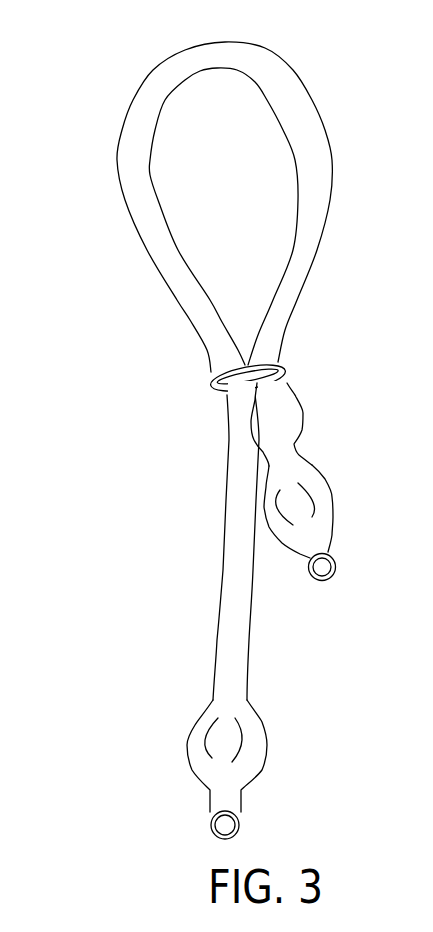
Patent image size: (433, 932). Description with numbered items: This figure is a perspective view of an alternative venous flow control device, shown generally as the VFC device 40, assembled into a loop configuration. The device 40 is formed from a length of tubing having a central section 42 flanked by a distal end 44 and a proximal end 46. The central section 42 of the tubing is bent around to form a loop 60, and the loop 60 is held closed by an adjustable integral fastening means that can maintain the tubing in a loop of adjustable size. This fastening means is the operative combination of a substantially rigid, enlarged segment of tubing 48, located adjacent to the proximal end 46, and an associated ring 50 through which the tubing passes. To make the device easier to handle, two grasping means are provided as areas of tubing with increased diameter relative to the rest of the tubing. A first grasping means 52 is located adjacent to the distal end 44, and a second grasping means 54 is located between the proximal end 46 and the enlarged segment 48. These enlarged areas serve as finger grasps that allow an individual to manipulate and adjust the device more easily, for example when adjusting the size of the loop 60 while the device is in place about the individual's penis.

The VFC device 40 is at (216, 426).
The central section 42 is at (322, 174).
The distal end 44 is at (240, 829).
The proximal end 46 is at (320, 581).
The enlarged segment of tubing 48 is at (319, 393).
The ring 50 is at (214, 385).
The first grasping means 52 is at (284, 734).
The second grasping means 54 is at (343, 468).
The loop 60 is at (260, 356).